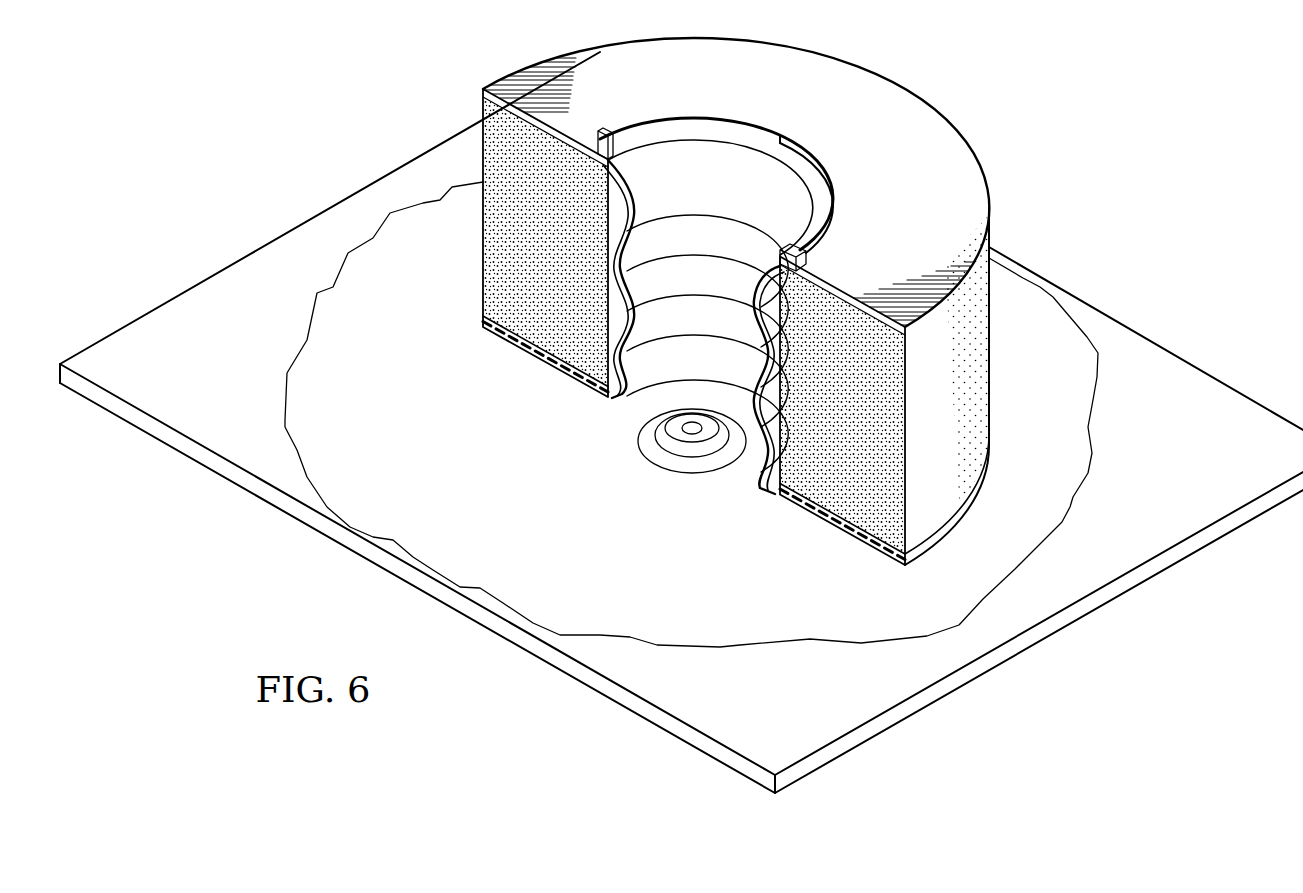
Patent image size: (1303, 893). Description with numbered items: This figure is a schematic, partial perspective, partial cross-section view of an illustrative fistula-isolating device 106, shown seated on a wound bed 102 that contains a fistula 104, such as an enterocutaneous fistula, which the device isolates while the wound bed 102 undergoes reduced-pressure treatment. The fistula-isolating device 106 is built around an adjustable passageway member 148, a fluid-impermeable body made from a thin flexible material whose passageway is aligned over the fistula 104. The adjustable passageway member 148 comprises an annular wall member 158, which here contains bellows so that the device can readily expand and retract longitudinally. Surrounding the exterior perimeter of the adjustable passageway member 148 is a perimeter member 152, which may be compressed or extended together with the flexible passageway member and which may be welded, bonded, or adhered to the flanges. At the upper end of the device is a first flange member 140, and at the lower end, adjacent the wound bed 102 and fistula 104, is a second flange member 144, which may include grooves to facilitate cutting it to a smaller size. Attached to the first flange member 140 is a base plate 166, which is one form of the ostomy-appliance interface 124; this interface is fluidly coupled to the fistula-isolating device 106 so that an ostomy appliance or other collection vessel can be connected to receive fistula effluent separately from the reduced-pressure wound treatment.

The wound bed 102 is at (1055, 530).
The fistula 104 is at (638, 442).
The fistula-isolating device 106 is at (936, 114).
The ostomy-appliance interface 124 is at (690, 117).
The first flange member 140 is at (975, 174).
The second flange member 144 is at (912, 565).
The adjustable passageway member 148 is at (718, 277).
The perimeter member 152 is at (947, 379).
The annular wall member 158 is at (658, 242).
The base plate 166 is at (830, 166).